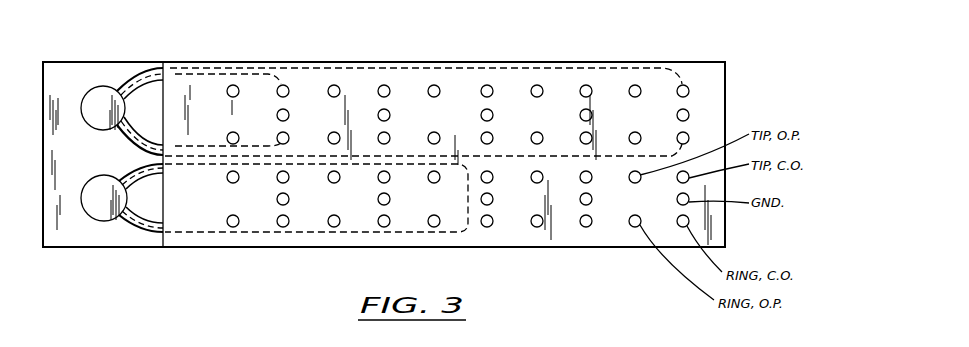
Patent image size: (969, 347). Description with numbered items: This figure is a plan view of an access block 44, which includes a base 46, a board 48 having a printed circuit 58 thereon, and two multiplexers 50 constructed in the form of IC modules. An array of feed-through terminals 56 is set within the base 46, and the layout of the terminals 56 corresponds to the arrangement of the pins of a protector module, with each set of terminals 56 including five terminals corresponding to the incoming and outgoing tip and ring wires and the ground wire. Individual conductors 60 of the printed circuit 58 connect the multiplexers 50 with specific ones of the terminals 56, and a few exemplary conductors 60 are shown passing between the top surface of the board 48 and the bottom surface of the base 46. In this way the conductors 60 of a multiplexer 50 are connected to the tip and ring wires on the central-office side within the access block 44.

The access block 44 is at (383, 58).
The base 46 is at (160, 233).
The board 48 is at (70, 62).
The multiplexers 50 is at (98, 112).
The feed-through terminals 56 is at (543, 86).
The printed circuit 58 is at (128, 75).
The conductors 60 is at (143, 75).